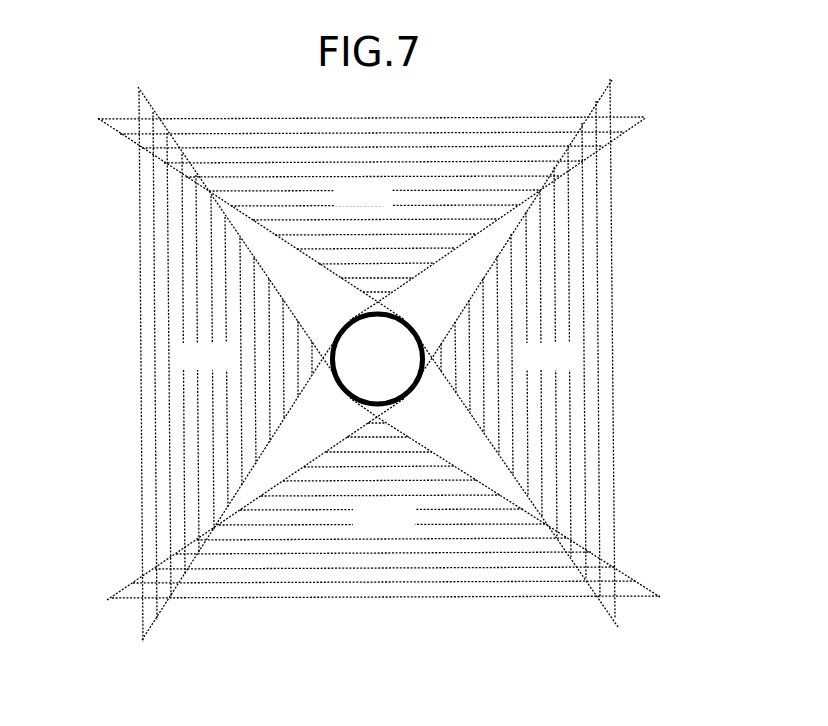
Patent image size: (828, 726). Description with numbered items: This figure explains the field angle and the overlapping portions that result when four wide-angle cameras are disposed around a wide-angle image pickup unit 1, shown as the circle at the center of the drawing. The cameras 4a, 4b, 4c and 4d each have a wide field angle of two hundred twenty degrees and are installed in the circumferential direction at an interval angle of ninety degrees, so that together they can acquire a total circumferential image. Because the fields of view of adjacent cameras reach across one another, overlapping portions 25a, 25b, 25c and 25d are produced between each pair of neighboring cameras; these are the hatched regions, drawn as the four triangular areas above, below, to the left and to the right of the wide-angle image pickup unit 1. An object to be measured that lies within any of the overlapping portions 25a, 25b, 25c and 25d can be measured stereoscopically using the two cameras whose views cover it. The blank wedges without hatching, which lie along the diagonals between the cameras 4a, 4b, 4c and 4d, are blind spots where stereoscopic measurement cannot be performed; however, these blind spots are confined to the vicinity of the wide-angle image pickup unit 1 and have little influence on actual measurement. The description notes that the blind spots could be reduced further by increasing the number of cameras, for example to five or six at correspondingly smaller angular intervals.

The wide-angle image pickup unit 1 is at (392, 303).
The overlapping portion 25a is at (386, 510).
The overlapping portion 25b is at (528, 349).
The overlapping portion 25c is at (371, 204).
The overlapping portion 25d is at (225, 366).
The camera 4a is at (410, 393).
The camera 4b is at (345, 393).
The camera 4c is at (346, 325).
The camera 4d is at (411, 327).